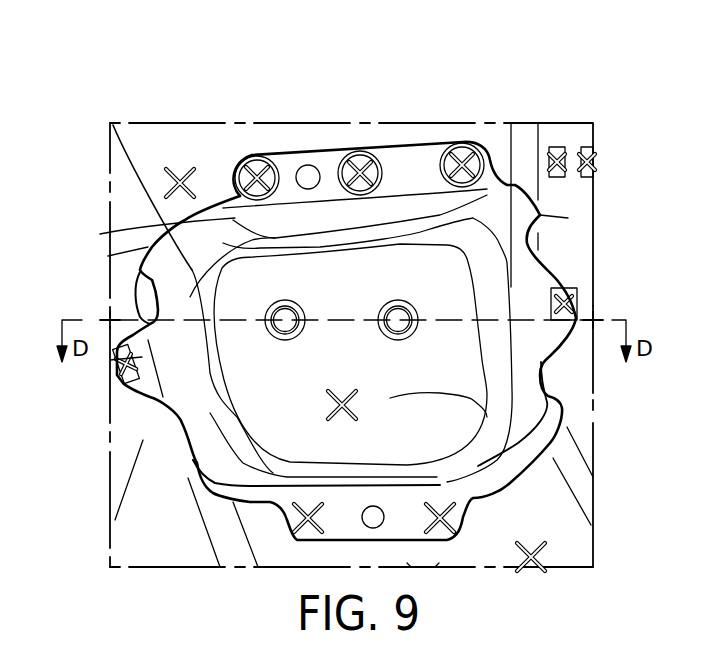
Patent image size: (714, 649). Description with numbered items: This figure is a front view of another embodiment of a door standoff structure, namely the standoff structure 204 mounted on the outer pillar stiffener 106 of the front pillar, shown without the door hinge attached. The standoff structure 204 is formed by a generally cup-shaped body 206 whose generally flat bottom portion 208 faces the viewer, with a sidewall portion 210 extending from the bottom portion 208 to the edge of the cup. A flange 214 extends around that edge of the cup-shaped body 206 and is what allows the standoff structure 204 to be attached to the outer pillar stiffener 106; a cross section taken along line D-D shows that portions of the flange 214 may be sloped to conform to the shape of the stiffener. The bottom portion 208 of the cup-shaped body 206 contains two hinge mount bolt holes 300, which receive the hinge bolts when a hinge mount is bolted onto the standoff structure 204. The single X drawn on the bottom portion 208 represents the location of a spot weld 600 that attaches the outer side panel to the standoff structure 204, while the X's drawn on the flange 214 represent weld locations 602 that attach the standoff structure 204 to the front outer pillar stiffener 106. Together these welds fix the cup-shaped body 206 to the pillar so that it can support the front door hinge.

The outer pillar stiffener 106 is at (568, 218).
The standoff structure 204 is at (506, 95).
The cup-shaped body 206 is at (557, 110).
The bottom portion 208 is at (280, 398).
The sidewall portion 210 is at (135, 229).
The flange 214 is at (533, 287).
The hinge mount bolt holes 300 is at (277, 297).
The spot weld 600 is at (390, 398).
The weld locations 602 is at (462, 165).